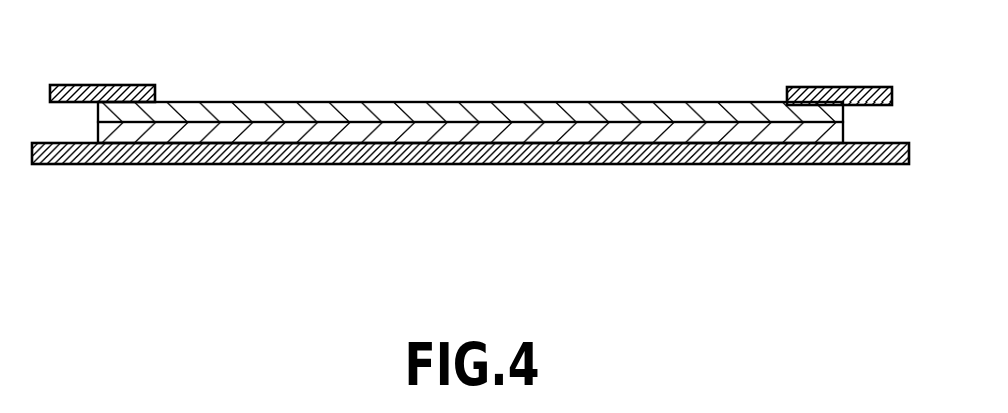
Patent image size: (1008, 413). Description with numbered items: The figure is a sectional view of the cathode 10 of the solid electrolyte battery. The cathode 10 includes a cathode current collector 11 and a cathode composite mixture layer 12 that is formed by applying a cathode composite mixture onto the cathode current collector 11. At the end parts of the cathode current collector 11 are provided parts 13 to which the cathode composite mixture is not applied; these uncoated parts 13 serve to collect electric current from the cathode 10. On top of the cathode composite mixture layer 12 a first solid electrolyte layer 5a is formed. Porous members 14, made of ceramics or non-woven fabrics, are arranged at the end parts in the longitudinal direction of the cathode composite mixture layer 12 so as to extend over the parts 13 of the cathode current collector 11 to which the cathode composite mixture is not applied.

The cathode 10 is at (470, 195).
The cathode current collector 11 is at (205, 152).
The cathode composite mixture layer 12 is at (177, 237).
The parts to which the cathode composite mixture is not applied 13 is at (730, 165).
The porous members 14 is at (100, 85).
The first solid electrolyte layer 5a is at (555, 110).